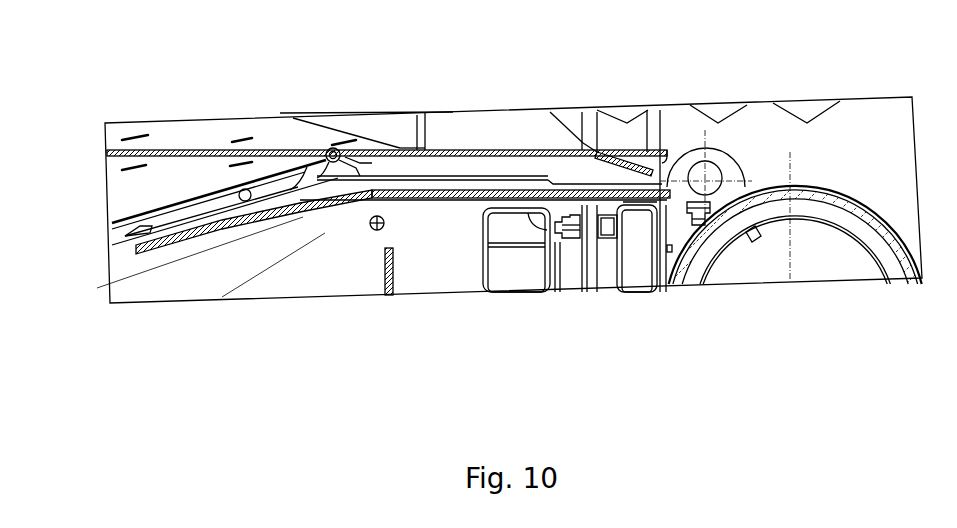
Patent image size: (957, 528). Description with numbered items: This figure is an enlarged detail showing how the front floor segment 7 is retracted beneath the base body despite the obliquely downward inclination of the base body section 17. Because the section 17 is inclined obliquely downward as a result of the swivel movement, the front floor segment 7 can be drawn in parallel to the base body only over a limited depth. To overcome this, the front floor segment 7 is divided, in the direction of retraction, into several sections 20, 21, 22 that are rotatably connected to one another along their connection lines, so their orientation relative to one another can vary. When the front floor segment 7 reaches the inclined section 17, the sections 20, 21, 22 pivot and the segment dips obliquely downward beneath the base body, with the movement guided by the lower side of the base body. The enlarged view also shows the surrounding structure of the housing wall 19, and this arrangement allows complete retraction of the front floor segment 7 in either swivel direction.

The front floor segment 7 is at (212, 229).
The section of the base body 17 is at (132, 184).
The upper wall panel 19 is at (178, 133).
The section of the front floor segment 20 is at (225, 224).
The section of the front floor segment 21 is at (293, 218).
The section of the front floor segment 22 is at (423, 198).